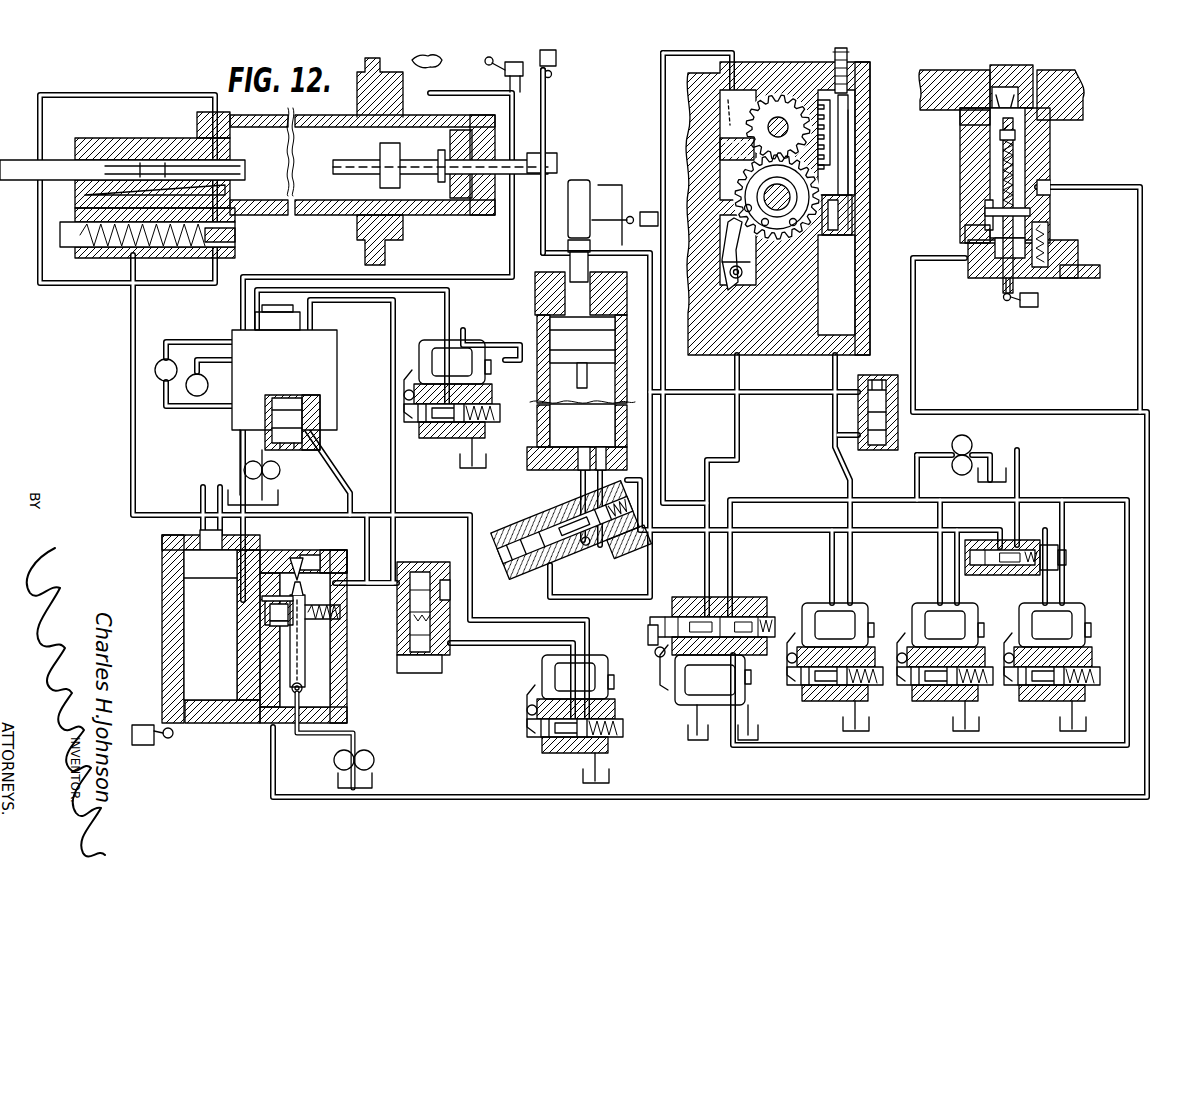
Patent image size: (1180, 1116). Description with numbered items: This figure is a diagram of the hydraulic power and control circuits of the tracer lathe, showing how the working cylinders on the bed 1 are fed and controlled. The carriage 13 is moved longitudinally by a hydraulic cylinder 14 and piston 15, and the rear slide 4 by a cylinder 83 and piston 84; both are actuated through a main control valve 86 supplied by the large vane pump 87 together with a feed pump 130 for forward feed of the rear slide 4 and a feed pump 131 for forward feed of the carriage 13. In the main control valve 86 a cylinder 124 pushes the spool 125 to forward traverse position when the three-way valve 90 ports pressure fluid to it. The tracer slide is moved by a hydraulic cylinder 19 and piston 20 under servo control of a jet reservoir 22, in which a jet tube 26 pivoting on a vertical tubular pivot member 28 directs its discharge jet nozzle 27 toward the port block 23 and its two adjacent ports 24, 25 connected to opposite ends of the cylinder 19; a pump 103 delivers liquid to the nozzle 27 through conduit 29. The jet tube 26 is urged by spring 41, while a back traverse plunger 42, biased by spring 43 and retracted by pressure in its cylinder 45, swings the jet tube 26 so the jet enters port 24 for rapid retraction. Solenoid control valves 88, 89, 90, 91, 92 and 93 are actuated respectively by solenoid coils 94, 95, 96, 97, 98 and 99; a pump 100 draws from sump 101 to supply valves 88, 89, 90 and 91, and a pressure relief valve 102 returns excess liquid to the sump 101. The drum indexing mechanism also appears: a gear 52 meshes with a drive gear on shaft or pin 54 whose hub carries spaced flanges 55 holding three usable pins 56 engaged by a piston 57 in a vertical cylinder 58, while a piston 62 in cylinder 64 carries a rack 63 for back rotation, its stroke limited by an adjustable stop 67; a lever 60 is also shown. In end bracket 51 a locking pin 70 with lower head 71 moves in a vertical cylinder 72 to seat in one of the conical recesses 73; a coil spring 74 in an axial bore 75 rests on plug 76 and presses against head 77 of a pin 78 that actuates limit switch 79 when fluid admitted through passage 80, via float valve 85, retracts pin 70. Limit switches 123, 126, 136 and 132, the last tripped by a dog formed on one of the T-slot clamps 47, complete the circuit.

The bed 1 is at (362, 258).
The rear slide 4 is at (604, 185).
The carriage 13 is at (549, 112).
The hydraulic cylinder 14 is at (303, 120).
The piston 15 is at (380, 145).
The hydraulic cylinder 19 is at (162, 610).
The piston 20 is at (186, 567).
The jet reservoir 22 is at (330, 700).
The port block 23 is at (318, 555).
The port 24 is at (334, 558).
The port 25 is at (292, 560).
The jet tube 26 is at (305, 648).
The discharge jet nozzle 27 is at (304, 592).
The vertical tubular pivot member 28 is at (303, 688).
The conduit 29 is at (310, 738).
The spring 41 is at (341, 614).
The back traverse plunger 42 is at (292, 623).
The spring 43 is at (265, 612).
The cylinder 45 is at (262, 598).
The T-slot clamps 47 is at (412, 60).
The end bracket 51 is at (960, 156).
The gear 52 is at (780, 95).
The shaft or pin 54 is at (777, 186).
The spaced flanges 55 is at (840, 195).
The pins 56 is at (762, 204).
The piston 57 is at (722, 160).
The vertical cylinder 58 is at (703, 278).
The lever 60 is at (730, 228).
The piston 62 is at (850, 125).
The rack 63 is at (833, 134).
The cylinder 64 is at (870, 238).
The adjustable stop 67 is at (850, 60).
The locking pin 70 is at (992, 112).
The lower head 71 is at (985, 205).
The vertical cylinder 72 is at (965, 232).
The conical recesses 73 is at (1003, 90).
The coil spring 74 is at (1015, 165).
The axial bore 75 is at (1030, 212).
The plug 76 is at (1048, 243).
The head 77 is at (1015, 135).
The pin 78 is at (1004, 290).
The limit switch 79 is at (1026, 307).
The passage 80 is at (1052, 183).
The cylinder 83 is at (548, 428).
The piston 84 is at (550, 360).
The float valve 85 is at (888, 375).
The main control valve 86 is at (232, 412).
The large vane pump 87 is at (281, 476).
The solenoid control valve 88 is at (748, 597).
The solenoid control valve 89 is at (815, 701).
The solenoid control valve 90 is at (938, 701).
The solenoid control valve 91 is at (1040, 701).
The solenoid control valve 92 is at (556, 753).
The solenoid control valve 93 is at (438, 438).
The solenoid coil 94 is at (678, 700).
The solenoid coil 95 is at (815, 605).
The solenoid coil 96 is at (920, 605).
The solenoid coil 97 is at (1030, 608).
The solenoid coil 98 is at (545, 668).
The solenoid coil 99 is at (432, 350).
The pump 100 is at (970, 442).
The sump 101 is at (978, 482).
The pressure relief valve 102 is at (1062, 548).
The pump 103 is at (375, 755).
The limit switch 123 is at (556, 58).
The cylinder 124 is at (270, 397).
The spool 125 is at (296, 398).
The limit switch 126 is at (626, 210).
The feed pump 130 is at (163, 358).
The feed pump 131 is at (210, 388).
The limit switch 132 is at (504, 67).
The limit switch 136 is at (150, 745).